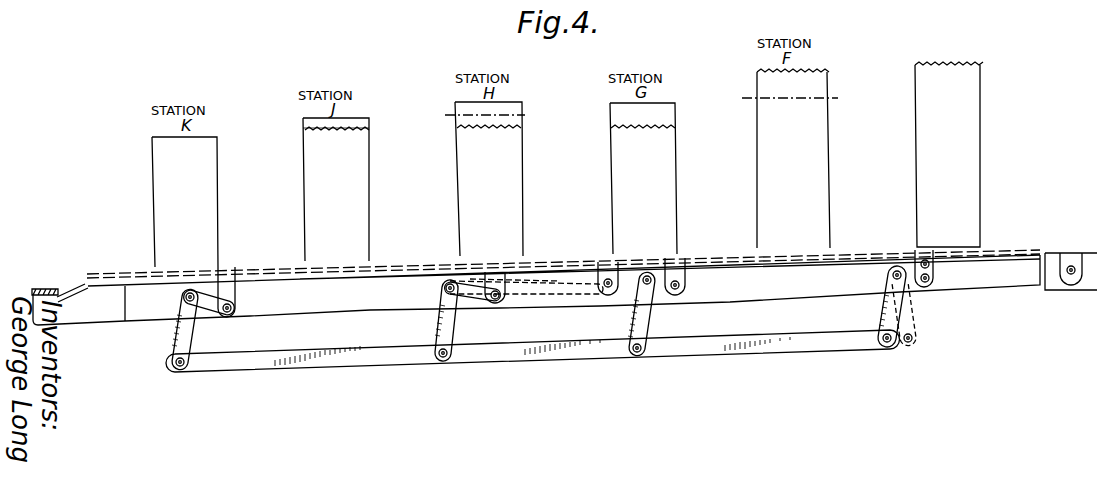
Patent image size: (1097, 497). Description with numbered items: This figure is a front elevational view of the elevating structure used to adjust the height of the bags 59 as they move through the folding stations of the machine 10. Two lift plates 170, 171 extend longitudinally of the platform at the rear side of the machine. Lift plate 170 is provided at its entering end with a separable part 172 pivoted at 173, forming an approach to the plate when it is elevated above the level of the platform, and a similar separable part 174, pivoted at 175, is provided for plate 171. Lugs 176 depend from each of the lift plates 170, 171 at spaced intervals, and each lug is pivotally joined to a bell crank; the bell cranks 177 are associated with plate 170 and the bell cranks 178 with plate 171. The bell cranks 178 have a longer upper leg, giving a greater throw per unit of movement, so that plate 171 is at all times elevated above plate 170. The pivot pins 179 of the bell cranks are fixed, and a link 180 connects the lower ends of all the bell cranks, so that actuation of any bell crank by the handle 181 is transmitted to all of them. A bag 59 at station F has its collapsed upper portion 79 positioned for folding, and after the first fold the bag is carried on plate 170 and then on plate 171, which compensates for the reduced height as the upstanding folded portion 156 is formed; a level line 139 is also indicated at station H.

The machine frame 10 is at (52, 283).
The bag 59 is at (313, 198).
The collapsed upper portion 79 is at (820, 82).
The fill level line at station H 139 is at (520, 101).
The upstanding folded portion 156 is at (303, 128).
The lift plate 170 is at (563, 269).
The lift plate 171 is at (368, 285).
The separable part 172 is at (1033, 256).
The pivot 173 is at (1071, 283).
The separable part 174 is at (568, 272).
The pivot 175 is at (606, 296).
The lugs 176 is at (236, 300).
The bell cranks 177 is at (652, 318).
The bell cranks 178 is at (197, 333).
The pivot pins 179 is at (440, 289).
The link 180 is at (482, 356).
The handle 181 is at (519, 299).